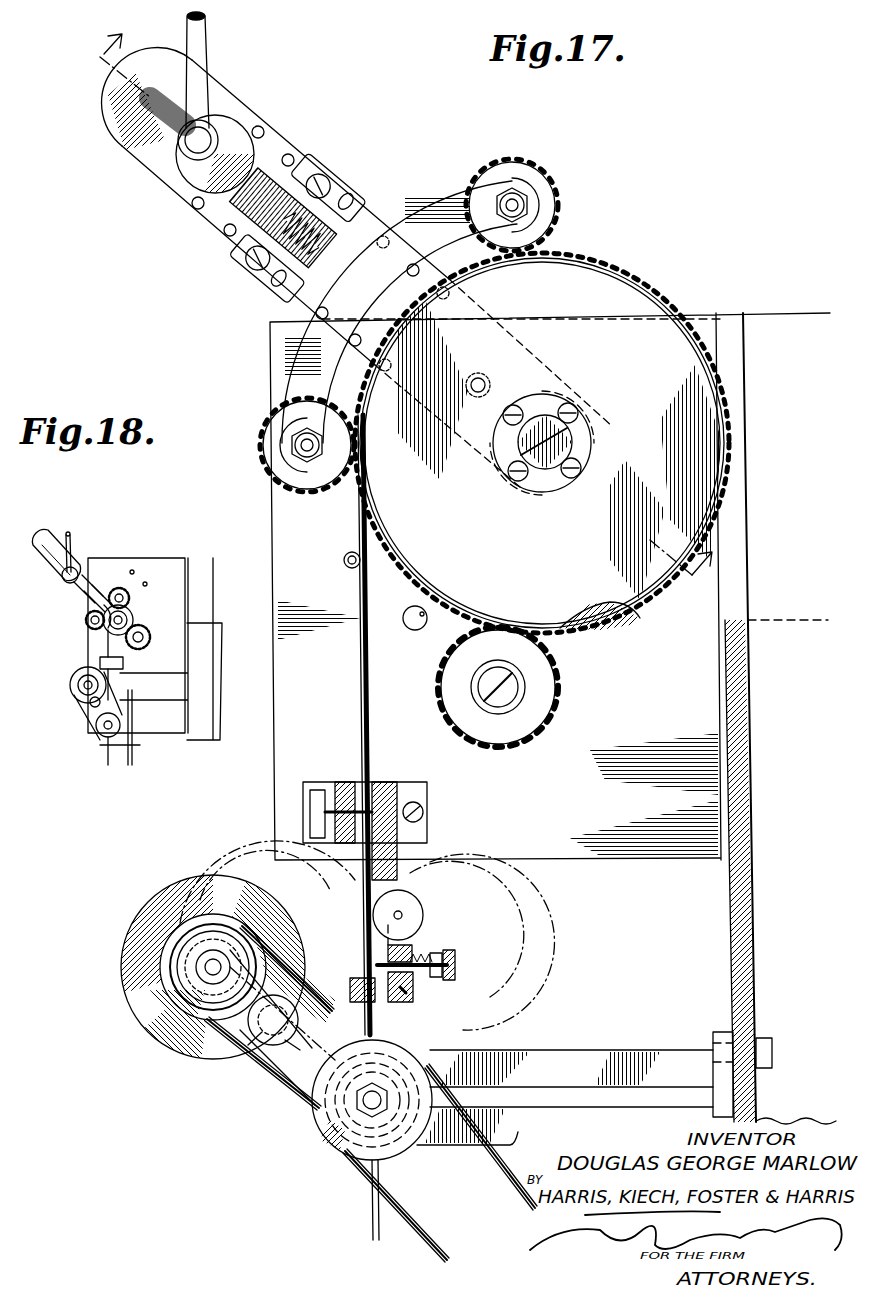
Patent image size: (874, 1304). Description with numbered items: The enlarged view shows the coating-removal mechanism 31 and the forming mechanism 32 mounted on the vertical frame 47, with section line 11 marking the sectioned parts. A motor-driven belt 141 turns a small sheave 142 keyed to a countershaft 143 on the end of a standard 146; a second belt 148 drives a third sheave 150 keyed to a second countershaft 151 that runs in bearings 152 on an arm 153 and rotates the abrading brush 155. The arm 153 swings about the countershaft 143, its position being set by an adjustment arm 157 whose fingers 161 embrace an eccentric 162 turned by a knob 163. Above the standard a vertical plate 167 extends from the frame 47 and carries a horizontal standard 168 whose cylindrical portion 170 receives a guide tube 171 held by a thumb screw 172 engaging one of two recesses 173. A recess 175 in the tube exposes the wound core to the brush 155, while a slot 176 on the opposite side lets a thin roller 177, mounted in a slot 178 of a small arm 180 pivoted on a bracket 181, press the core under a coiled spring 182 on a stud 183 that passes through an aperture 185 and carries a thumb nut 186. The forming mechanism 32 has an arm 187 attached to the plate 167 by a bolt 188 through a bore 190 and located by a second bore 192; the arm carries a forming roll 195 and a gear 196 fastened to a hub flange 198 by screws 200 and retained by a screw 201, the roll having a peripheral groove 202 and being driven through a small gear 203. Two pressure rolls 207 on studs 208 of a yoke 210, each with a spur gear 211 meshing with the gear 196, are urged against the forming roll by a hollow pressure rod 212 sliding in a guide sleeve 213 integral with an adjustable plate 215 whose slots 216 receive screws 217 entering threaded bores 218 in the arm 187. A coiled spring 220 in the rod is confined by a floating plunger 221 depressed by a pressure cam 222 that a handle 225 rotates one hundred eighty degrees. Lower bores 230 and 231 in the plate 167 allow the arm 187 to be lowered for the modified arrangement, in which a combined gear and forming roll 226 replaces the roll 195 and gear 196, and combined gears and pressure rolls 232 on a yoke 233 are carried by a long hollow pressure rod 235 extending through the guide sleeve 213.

In FIG. 17, the section line 11- 11 is at (391, 321).
In FIG. 17, the coating-removal mechanism 31 is at (160, 866).
In FIG. 18, the coating-removal mechanism 31 is at (78, 716).
In FIG. 17, the forming mechanism 32 is at (640, 195).
In FIG. 17, the vertical frame 47 is at (752, 712).
In FIG. 17, the belt 141 is at (362, 1192).
In FIG. 17, the small sheave 142 is at (342, 1140).
In FIG. 17, the small countershaft 143 is at (380, 1110).
In FIG. 17, the standard 146 is at (645, 1067).
In FIG. 17, the belt 148 is at (340, 1112).
In FIG. 17, the third sheave 150 is at (163, 937).
In FIG. 17, the second countershaft 151 is at (200, 967).
In FIG. 17, the bearings 152 is at (195, 988).
In FIG. 17, the arm 153 is at (207, 1005).
In FIG. 17, the rotary abrading means 155 is at (140, 905).
In FIG. 17, the adjustment arm 157 is at (330, 1080).
In FIG. 17, the fingers 161 is at (275, 1046).
In FIG. 17, the eccentric 162 is at (283, 1050).
In FIG. 17, the adjustment knob 163 is at (255, 1037).
In FIG. 17, the vertical plate 167 is at (672, 845).
In FIG. 18, the vertical plate 167 is at (170, 673).
In FIG. 17, the horizontal standard 168 is at (412, 800).
In FIG. 17, the cylindrical portion 170 is at (390, 788).
In FIG. 17, the guide tube 171 is at (348, 780).
In FIG. 17, the thumb screw 172 is at (350, 812).
In FIG. 17, the recesses 173 is at (322, 798).
In FIG. 17, the recess 175 is at (350, 883).
In FIG. 17, the longitudinal slot 176 is at (392, 885).
In FIG. 17, the roller 177 is at (447, 862).
In FIG. 17, the slot 178 is at (424, 912).
In FIG. 17, the small arm 180 is at (412, 950).
In FIG. 17, the small bracket 181 is at (382, 1004).
In FIG. 17, the coiled spring 182 is at (430, 978).
In FIG. 17, the stud 183 is at (457, 965).
In FIG. 17, the aperture 185 is at (413, 1000).
In FIG. 17, the thumb nut 186 is at (434, 956).
In FIG. 17, the arm 187 is at (105, 118).
In FIG. 18, the arm 187 is at (42, 535).
In FIG. 17, the bolt 188 is at (492, 382).
In FIG. 18, the bore 190 is at (133, 568).
In FIG. 18, the second bore 192 is at (147, 582).
In FIG. 17, the forming roll 195 is at (657, 310).
In FIG. 17, the gear 196 is at (630, 276).
In FIG. 17, the flange 198 is at (585, 436).
In FIG. 17, the screws 200 is at (515, 477).
In FIG. 17, the screw 201 is at (548, 468).
In FIG. 17, the peripheral groove 202 is at (565, 635).
In FIG. 17, the small gear 203 is at (545, 708).
In FIG. 18, the small gear 203 is at (150, 637).
In FIG. 17, the pressure rolls 207 is at (555, 203).
In FIG. 17, the studs 208 is at (518, 195).
In FIG. 17, the yoke 210 is at (440, 210).
In FIG. 17, the spur gear 211 is at (502, 162).
In FIG. 17, the hollow pressure rod 212 is at (250, 245).
In FIG. 17, the guide sleeve 213 is at (345, 205).
In FIG. 18, the guide sleeve 213 is at (90, 607).
In FIG. 17, the adjustable plate 215 is at (338, 190).
In FIG. 17, the slots 216 is at (352, 205).
In FIG. 17, the screws 217 is at (320, 178).
In FIG. 17, the threaded bores 218 is at (262, 125).
In FIG. 17, the coiled spring 220 is at (297, 190).
In FIG. 17, the floating plunger 221 is at (235, 222).
In FIG. 17, the pressure cam 222 is at (180, 165).
In FIG. 18, the pressure cam 222 is at (62, 578).
In FIG. 17, the operating handle 225 is at (205, 50).
In FIG. 18, the operating handle 225 is at (68, 530).
In FIG. 18, the combined gear and forming roll 226 is at (133, 615).
In FIG. 17, the lower bore 230 is at (347, 566).
In FIG. 17, the second lower bore 231 is at (412, 631).
In FIG. 18, the combined gears and pressure rolls 232 is at (118, 588).
In FIG. 18, the yoke 233 is at (90, 627).
In FIG. 18, the hollow pressure rod 235 is at (77, 597).